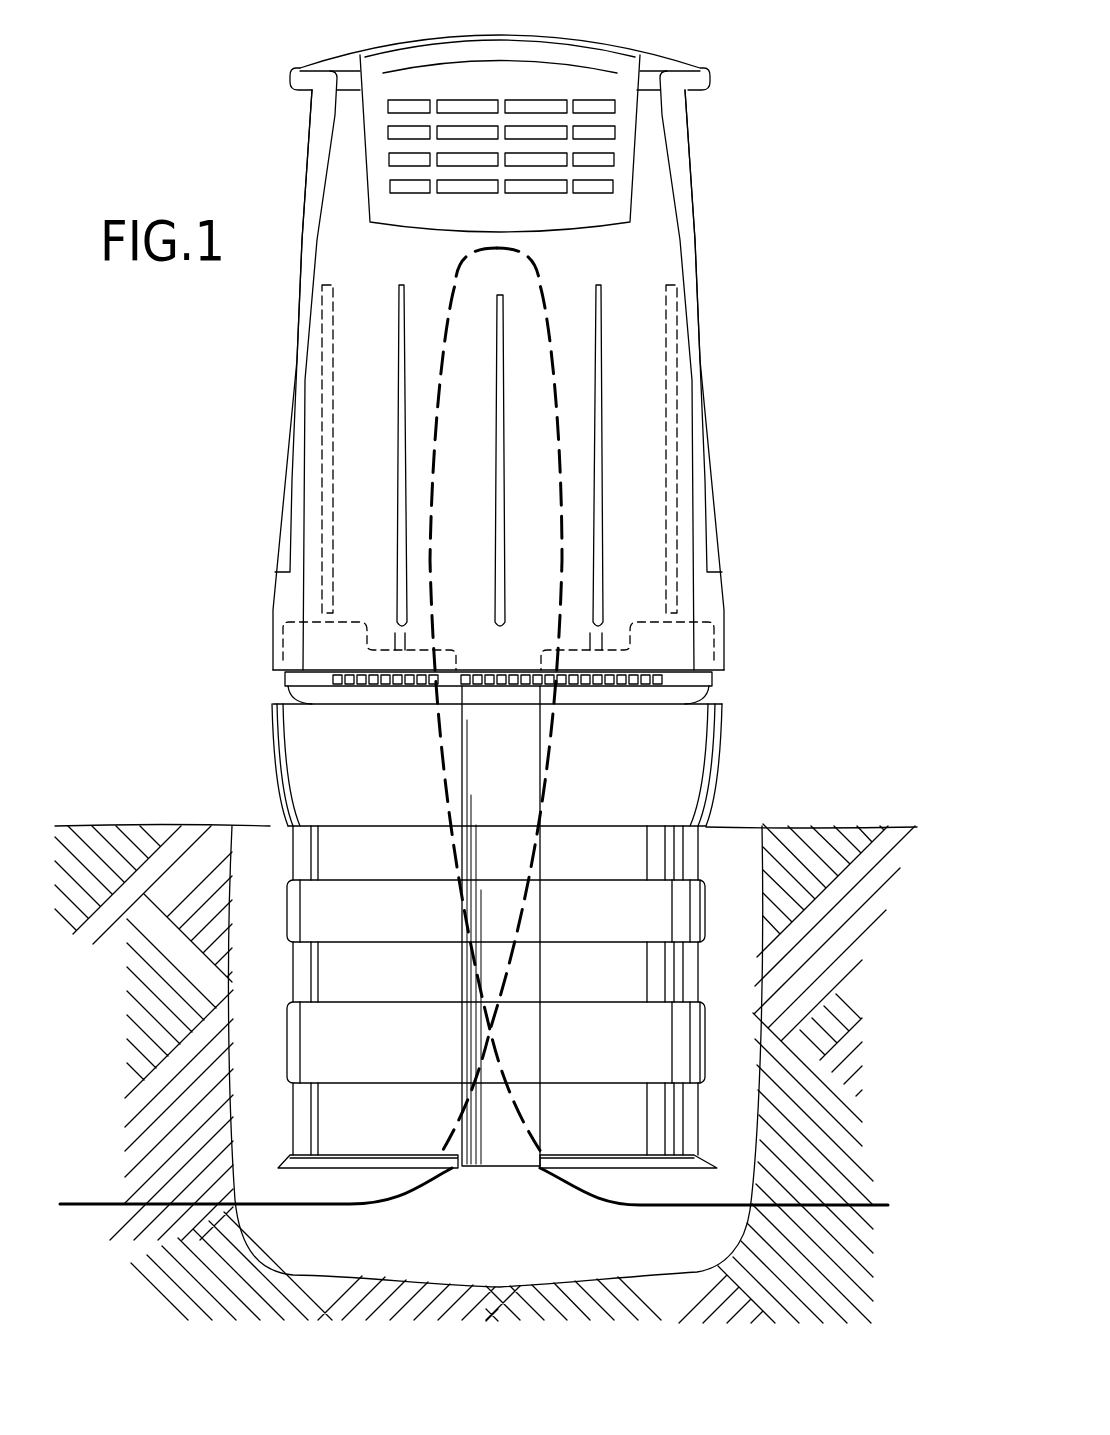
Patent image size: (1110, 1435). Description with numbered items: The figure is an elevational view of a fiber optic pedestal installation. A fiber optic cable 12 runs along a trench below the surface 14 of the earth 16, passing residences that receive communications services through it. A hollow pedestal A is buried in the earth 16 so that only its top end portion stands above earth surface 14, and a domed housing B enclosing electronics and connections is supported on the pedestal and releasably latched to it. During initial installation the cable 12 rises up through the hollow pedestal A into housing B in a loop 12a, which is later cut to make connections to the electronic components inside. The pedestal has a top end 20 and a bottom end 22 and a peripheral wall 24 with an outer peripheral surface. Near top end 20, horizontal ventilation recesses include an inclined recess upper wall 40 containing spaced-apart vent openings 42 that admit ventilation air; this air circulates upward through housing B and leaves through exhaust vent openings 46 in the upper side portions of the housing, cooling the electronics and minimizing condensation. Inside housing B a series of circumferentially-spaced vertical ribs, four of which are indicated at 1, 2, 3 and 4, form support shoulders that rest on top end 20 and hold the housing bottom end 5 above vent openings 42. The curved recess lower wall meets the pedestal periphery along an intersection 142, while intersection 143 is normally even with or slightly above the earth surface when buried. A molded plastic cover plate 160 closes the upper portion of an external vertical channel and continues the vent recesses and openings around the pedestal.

The vertical rib 1 is at (322, 358).
The vertical rib 2 is at (407, 634).
The vertical rib 3 is at (590, 636).
The vertical rib 4 is at (680, 370).
The housing bottom end 5 is at (283, 672).
The fiber optic cable 12 is at (330, 1206).
The loop 12a is at (538, 290).
The earth surface 14 is at (150, 810).
The earth 16 is at (882, 1090).
The top end 20 is at (685, 620).
The bottom end 22 is at (440, 1178).
The peripheral wall 24 is at (712, 782).
The inclined recess upper wall 40 is at (330, 680).
The vent openings 42 is at (630, 688).
The exhaust vent openings 46 is at (538, 105).
The intersection 142 is at (395, 706).
The intersection 143 is at (713, 842).
The cover plate 160 is at (510, 806).
The hollow pedestal A is at (730, 695).
The domed housing B is at (284, 188).